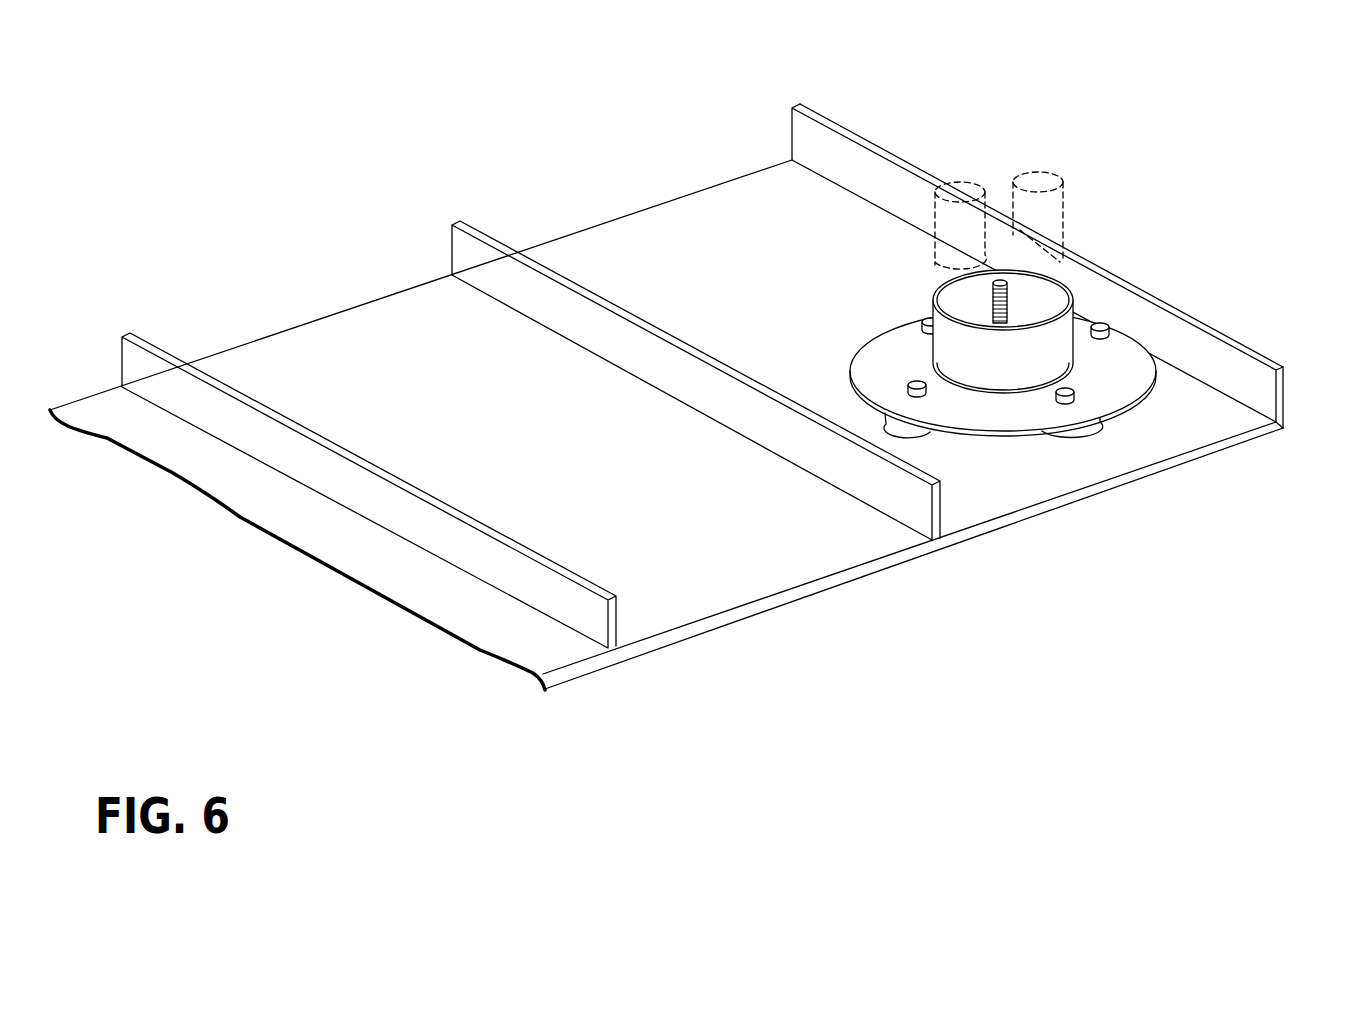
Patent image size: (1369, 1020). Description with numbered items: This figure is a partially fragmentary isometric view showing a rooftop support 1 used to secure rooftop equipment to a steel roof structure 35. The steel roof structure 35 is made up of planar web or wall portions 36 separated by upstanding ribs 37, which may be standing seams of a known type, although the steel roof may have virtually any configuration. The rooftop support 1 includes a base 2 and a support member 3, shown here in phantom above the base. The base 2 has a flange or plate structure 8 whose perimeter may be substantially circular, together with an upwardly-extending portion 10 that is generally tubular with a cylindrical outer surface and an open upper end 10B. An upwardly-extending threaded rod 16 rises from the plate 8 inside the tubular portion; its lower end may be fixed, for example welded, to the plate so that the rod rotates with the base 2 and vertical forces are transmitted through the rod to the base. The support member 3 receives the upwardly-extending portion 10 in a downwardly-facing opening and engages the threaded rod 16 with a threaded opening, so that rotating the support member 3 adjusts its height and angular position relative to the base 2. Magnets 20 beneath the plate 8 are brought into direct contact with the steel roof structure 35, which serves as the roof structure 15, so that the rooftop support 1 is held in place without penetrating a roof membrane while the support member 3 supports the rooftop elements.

The rooftop support 1 is at (1063, 278).
The base 2 is at (1144, 337).
The support member 3 is at (1052, 176).
The flange or plate structure 8 is at (1118, 372).
The upwardly-extending portion 10 is at (1050, 337).
The open upper end 10B is at (953, 281).
The roof structure 15 is at (897, 155).
The threaded rod 16 is at (1003, 282).
The magnets 20 is at (907, 430).
The steel roof structure 35 is at (1288, 388).
The planar web or wall portions 36 is at (348, 342).
The ribs 37 is at (155, 347).